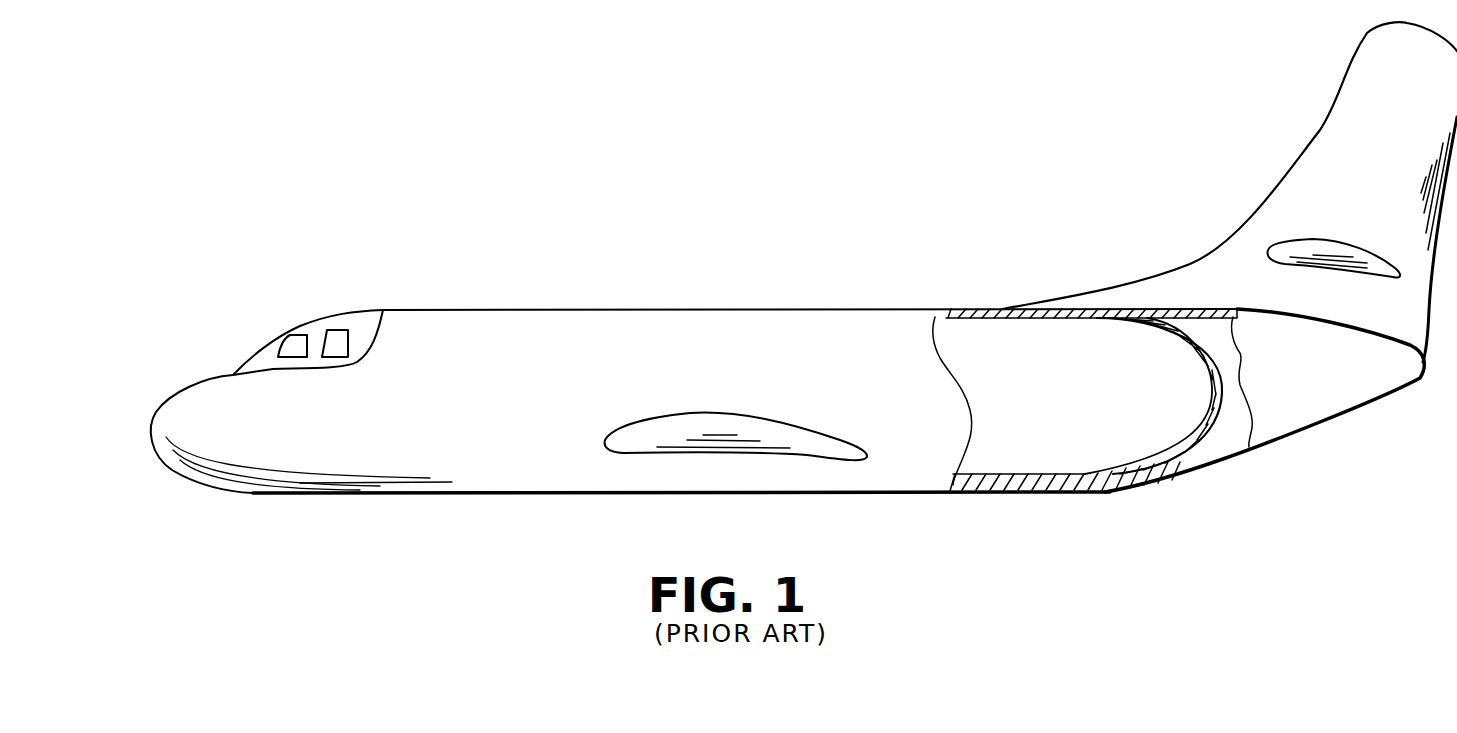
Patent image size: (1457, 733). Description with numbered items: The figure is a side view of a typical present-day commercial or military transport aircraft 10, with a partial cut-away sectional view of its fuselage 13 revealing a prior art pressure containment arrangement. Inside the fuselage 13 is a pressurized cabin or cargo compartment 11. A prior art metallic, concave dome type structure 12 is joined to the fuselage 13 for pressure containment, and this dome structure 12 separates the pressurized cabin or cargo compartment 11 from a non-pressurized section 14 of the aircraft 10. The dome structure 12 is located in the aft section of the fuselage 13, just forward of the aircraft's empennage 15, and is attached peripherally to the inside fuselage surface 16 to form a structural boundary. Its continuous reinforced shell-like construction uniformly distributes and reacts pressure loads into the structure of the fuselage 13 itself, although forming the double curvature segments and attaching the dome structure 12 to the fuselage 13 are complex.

The aircraft 10 is at (545, 311).
The pressurized cabin or cargo compartment 11 is at (962, 335).
The dome structure 12 is at (1207, 392).
The fuselage 13 is at (1033, 494).
The non-pressurized section 14 is at (1228, 440).
The empennage 15 is at (1373, 368).
The inside fuselage surface 16 is at (1001, 319).